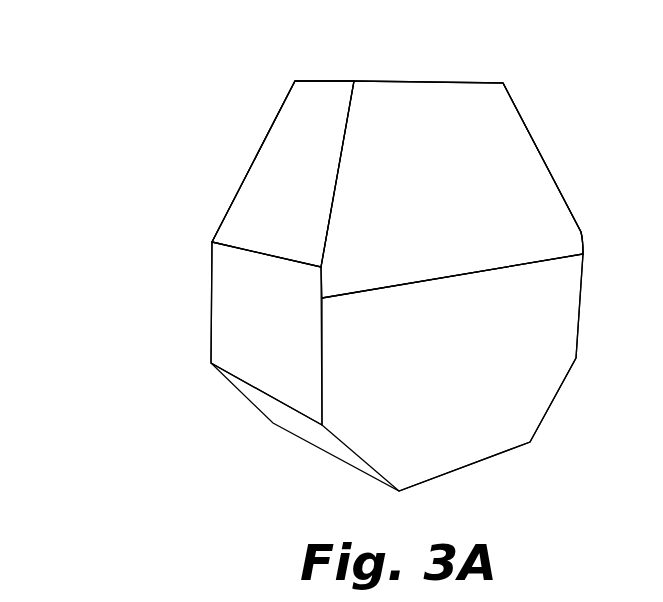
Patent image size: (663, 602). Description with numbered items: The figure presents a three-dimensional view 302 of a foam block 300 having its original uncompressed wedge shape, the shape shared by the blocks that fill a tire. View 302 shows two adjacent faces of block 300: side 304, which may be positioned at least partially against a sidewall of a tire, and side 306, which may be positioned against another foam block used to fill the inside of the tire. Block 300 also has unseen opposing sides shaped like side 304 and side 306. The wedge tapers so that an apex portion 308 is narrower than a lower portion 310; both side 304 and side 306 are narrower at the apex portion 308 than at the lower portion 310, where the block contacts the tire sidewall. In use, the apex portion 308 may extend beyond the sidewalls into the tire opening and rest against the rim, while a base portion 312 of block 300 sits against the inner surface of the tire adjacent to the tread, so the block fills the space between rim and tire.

The block 300 is at (130, 73).
The view 302 is at (267, 72).
The side 304 is at (258, 225).
The side 306 is at (520, 212).
The apex portion 308 is at (437, 105).
The lower portion 310 is at (227, 332).
The base portion 312 is at (473, 459).